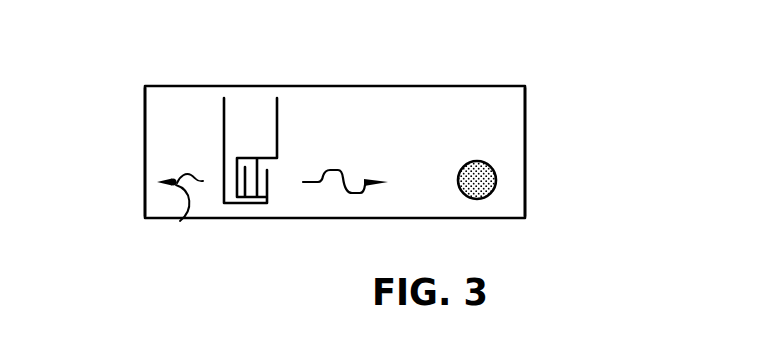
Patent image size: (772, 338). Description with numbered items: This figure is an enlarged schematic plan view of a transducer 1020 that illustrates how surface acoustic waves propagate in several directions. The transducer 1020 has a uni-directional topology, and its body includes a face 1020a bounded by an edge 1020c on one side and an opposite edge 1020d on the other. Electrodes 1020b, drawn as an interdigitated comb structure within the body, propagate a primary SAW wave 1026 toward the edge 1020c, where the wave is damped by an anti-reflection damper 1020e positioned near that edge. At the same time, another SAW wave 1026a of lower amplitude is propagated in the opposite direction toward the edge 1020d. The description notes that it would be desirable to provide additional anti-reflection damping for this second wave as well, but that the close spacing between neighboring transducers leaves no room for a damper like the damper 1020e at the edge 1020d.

The transducer 1020 is at (408, 85).
The front face of housing 1020a is at (458, 120).
The electrodes 1020b is at (257, 207).
The edge 1020c is at (710, 170).
The edge 1020d is at (143, 163).
The anti-reflection damper 1020e is at (695, 249).
The primary SAW wave 1026 is at (330, 168).
The SAW wave 1026a is at (180, 221).